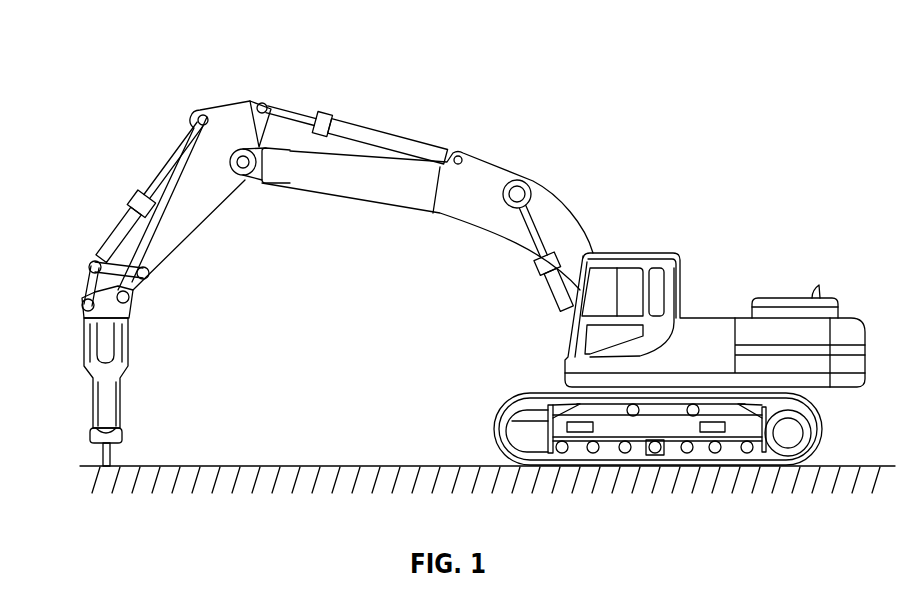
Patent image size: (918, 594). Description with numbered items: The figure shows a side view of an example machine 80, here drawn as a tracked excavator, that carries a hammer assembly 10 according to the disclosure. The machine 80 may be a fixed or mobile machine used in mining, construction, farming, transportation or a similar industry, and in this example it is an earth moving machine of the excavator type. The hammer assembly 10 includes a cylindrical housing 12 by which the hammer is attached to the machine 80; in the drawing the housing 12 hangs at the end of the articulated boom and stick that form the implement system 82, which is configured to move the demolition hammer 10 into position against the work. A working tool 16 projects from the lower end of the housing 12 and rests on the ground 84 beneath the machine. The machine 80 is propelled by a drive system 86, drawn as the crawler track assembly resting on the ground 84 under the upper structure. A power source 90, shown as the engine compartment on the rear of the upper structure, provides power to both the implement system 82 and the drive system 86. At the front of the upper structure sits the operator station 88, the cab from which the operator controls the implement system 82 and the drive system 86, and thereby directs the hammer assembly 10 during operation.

The hammer assembly 10 is at (105, 376).
The cylindrical housing 12 is at (116, 381).
The working tool / chisel 16 is at (112, 458).
The machine 80 is at (473, 251).
The implement system 82 is at (352, 174).
The ground / work surface 84 is at (244, 465).
The drive system 86 is at (495, 420).
The operator station 88 is at (622, 281).
The power source 90 is at (781, 298).